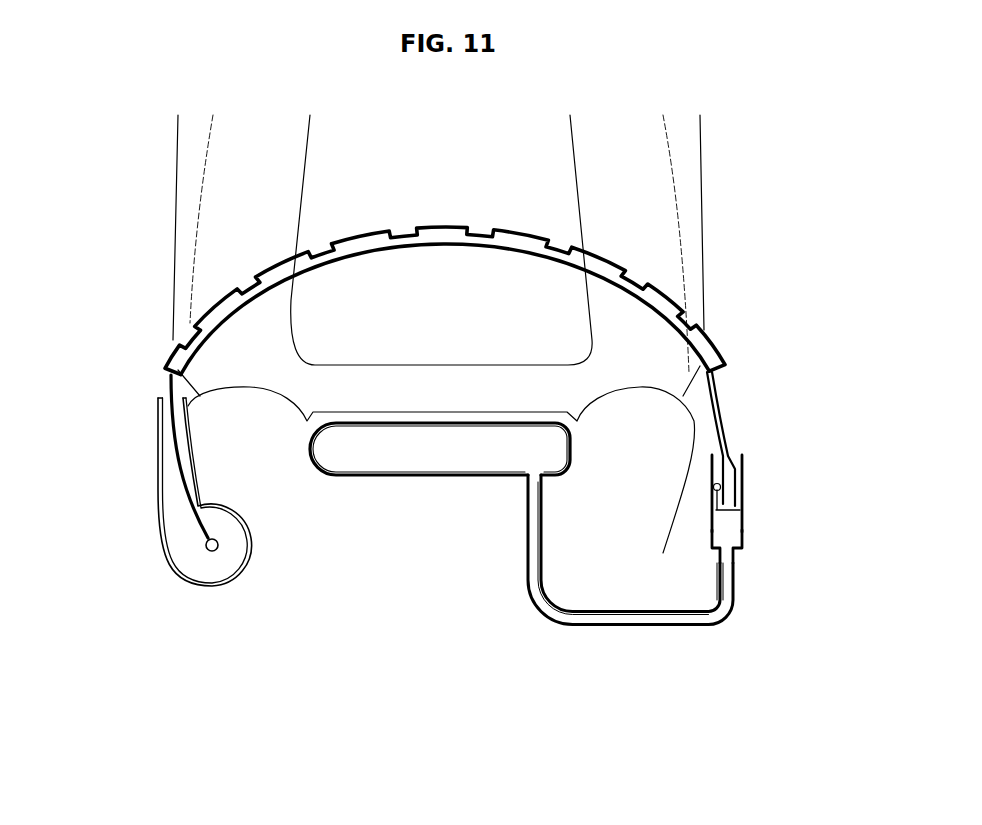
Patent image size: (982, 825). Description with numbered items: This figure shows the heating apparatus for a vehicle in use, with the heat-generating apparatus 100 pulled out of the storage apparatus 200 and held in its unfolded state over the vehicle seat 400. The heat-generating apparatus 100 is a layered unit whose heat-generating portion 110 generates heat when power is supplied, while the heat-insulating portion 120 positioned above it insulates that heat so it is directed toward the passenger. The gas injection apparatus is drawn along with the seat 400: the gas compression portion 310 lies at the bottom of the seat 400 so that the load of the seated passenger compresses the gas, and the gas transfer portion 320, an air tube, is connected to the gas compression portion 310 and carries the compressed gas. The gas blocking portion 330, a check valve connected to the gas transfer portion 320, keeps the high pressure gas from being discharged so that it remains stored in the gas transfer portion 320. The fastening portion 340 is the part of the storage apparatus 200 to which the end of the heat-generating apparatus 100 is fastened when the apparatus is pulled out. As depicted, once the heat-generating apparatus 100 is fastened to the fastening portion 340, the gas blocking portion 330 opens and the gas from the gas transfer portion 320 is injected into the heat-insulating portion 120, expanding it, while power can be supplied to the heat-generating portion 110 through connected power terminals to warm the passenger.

The heat-generating apparatus 100 is at (493, 314).
The heat-generating portion 110 is at (657, 307).
The heat-insulating portion 120 is at (610, 253).
The storage apparatus 200 is at (191, 590).
The gas compression portion 310 is at (397, 478).
The gas transfer portion 320 is at (617, 628).
The gas blocking portion 330 is at (745, 510).
The fastening portion 340 is at (747, 533).
The vehicle seat 400 is at (190, 207).